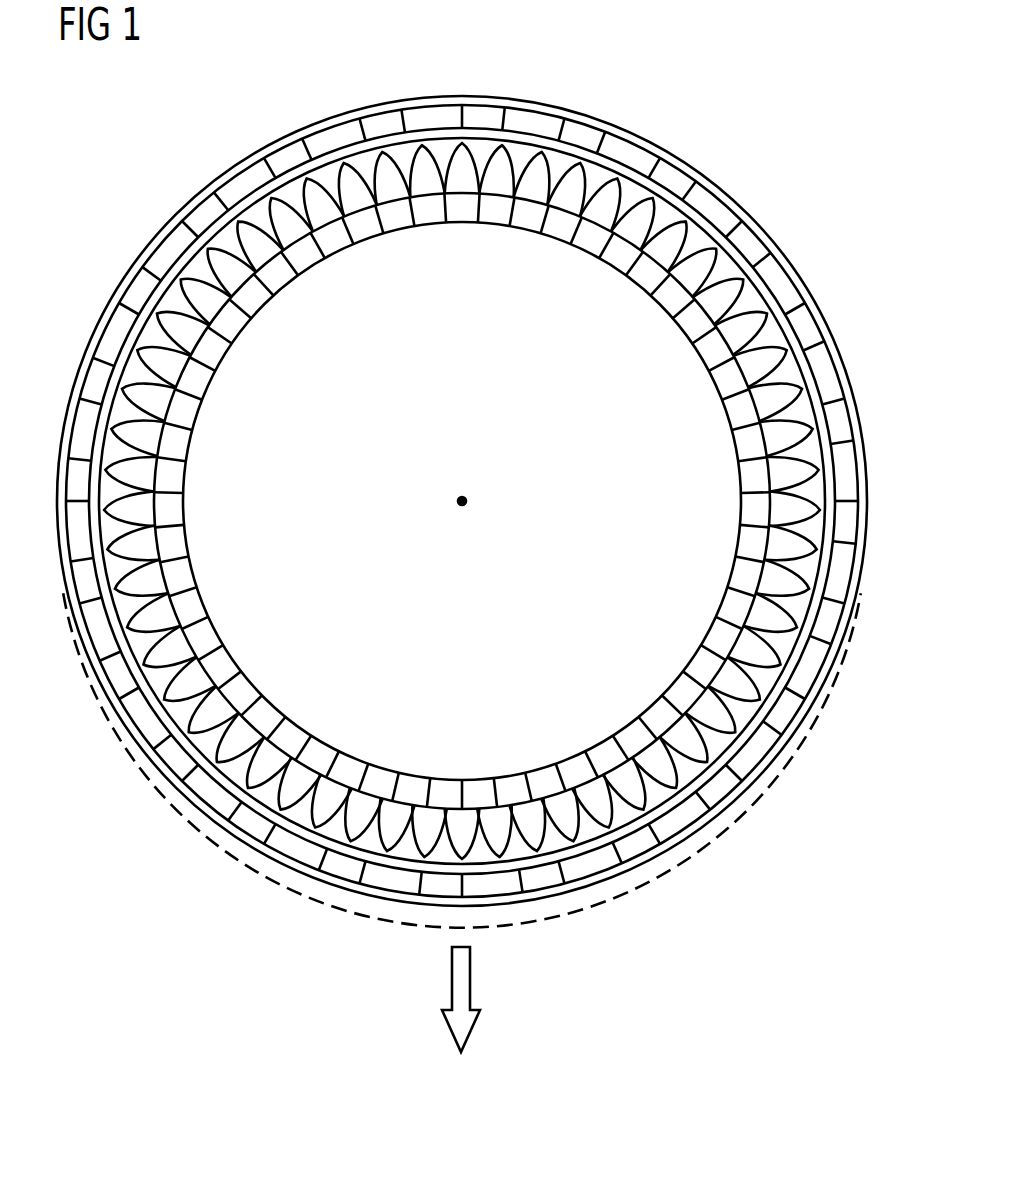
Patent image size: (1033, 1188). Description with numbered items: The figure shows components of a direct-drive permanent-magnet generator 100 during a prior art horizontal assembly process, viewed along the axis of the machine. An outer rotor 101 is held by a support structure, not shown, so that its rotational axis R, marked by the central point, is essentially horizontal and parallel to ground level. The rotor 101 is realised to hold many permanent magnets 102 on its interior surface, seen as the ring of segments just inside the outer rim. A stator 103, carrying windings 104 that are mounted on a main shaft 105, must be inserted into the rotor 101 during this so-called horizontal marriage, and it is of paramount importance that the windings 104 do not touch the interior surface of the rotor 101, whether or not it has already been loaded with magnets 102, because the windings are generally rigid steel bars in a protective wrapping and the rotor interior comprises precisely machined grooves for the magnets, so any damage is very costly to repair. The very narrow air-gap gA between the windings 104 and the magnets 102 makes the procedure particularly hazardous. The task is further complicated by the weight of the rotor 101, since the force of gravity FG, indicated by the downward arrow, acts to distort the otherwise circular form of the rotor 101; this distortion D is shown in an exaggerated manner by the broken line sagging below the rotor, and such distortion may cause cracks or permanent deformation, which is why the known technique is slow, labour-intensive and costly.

The direct-drive permanent-magnet generator 100 is at (160, 160).
The outer rotor 101 is at (637, 132).
The permanent magnets 102 is at (708, 205).
The stator 103 is at (730, 262).
The windings 104 is at (772, 347).
The main shaft 105 is at (715, 352).
The air-gap gA is at (385, 140).
The rotational axis R is at (462, 507).
The distortion D is at (655, 875).
The force of gravity FG is at (460, 982).